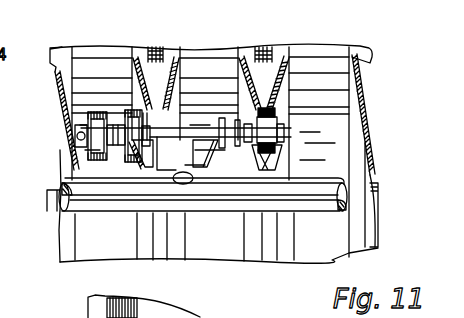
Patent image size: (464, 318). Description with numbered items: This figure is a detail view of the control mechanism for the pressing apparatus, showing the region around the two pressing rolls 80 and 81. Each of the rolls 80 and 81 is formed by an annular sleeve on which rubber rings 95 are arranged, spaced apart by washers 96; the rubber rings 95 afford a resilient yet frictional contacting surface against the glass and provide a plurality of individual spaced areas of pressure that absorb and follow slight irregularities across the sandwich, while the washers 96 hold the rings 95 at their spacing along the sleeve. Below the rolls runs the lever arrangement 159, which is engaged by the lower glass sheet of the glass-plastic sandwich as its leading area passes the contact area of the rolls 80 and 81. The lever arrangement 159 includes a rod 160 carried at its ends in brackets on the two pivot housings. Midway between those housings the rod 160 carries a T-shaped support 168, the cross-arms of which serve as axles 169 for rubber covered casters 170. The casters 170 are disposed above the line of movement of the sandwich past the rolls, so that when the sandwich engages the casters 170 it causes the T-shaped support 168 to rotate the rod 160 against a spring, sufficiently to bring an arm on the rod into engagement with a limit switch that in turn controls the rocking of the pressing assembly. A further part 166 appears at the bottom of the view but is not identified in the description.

The roll 80 is at (375, 149).
The roll 81 is at (374, 60).
The rubber rings 95 is at (104, 77).
The washers 96 is at (265, 53).
The lever arrangement 159 is at (93, 182).
The rod 160 is at (90, 195).
The bearing 166 is at (112, 310).
The T-shaped support 168 is at (186, 165).
The axles 169 is at (158, 133).
The rubber covered casters 170 is at (75, 130).